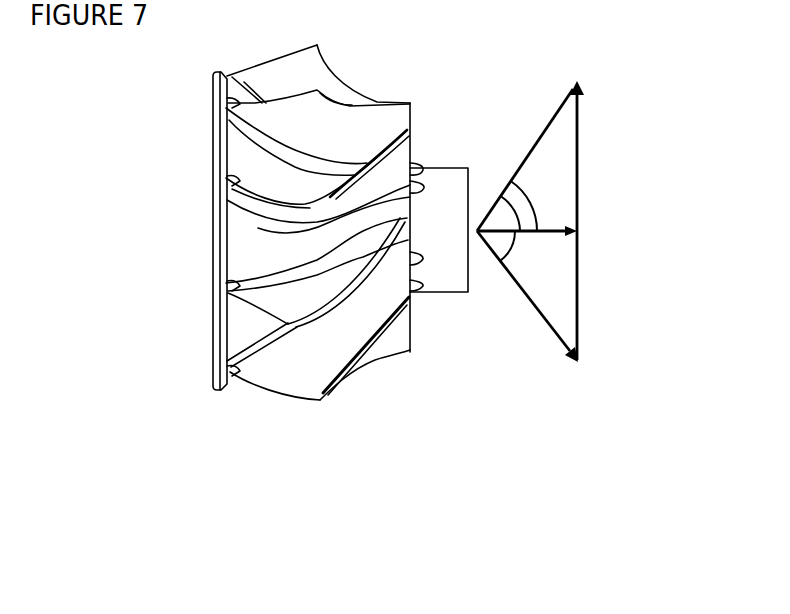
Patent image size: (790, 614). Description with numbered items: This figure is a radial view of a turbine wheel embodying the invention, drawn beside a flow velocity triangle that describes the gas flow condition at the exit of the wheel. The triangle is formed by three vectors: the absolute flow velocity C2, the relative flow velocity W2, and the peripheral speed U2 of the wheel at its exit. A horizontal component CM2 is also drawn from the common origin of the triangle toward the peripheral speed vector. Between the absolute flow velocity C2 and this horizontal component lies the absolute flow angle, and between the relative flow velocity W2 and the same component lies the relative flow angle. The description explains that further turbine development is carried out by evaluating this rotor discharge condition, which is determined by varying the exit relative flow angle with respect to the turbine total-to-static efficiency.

The absolute flow velocity C2 is at (540, 132).
The peripheral speed U2 is at (577, 192).
The meridional velocity component CM2 is at (545, 231).
The relative flow velocity W2 is at (527, 303).